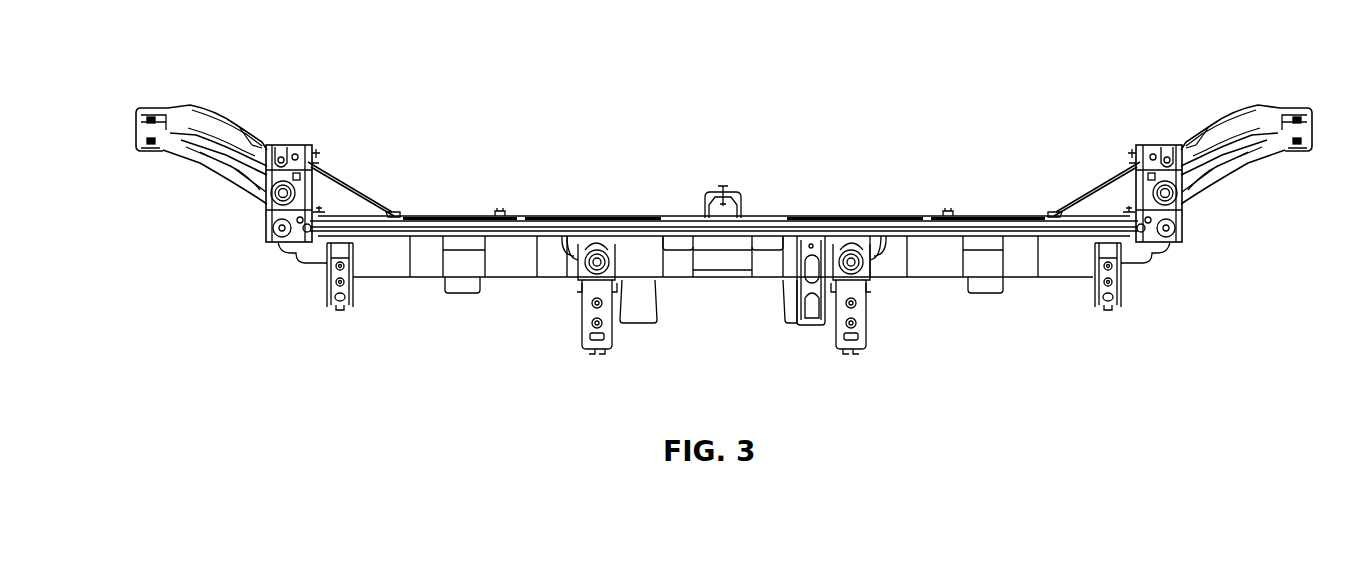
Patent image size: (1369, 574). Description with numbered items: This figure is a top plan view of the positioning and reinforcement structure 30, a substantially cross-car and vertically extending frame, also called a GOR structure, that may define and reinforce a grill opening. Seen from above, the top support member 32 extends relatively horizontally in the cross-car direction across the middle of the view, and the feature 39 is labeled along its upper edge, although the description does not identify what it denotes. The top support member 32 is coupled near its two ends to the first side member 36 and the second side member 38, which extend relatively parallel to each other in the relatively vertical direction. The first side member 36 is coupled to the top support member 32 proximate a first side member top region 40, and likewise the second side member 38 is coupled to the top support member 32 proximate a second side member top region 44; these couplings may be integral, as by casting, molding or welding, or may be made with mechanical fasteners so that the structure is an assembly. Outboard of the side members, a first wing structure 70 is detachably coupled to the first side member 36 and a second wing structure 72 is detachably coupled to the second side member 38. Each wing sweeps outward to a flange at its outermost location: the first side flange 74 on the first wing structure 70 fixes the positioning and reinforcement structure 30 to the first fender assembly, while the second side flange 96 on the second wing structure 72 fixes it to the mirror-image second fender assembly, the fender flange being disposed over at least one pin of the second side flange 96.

The positioning and reinforcement structure 30 is at (542, 115).
The top support member 32 is at (637, 222).
The first side member 36 is at (263, 213).
The second side member 38 is at (1183, 213).
The upper rail 39 is at (903, 213).
The first side member top region 40 is at (322, 211).
The second side member top region 44 is at (1127, 212).
The first wing structure 70 is at (230, 112).
The second wing structure 72 is at (1228, 112).
The first side flange 74 is at (142, 130).
The second side flange 96 is at (1302, 130).